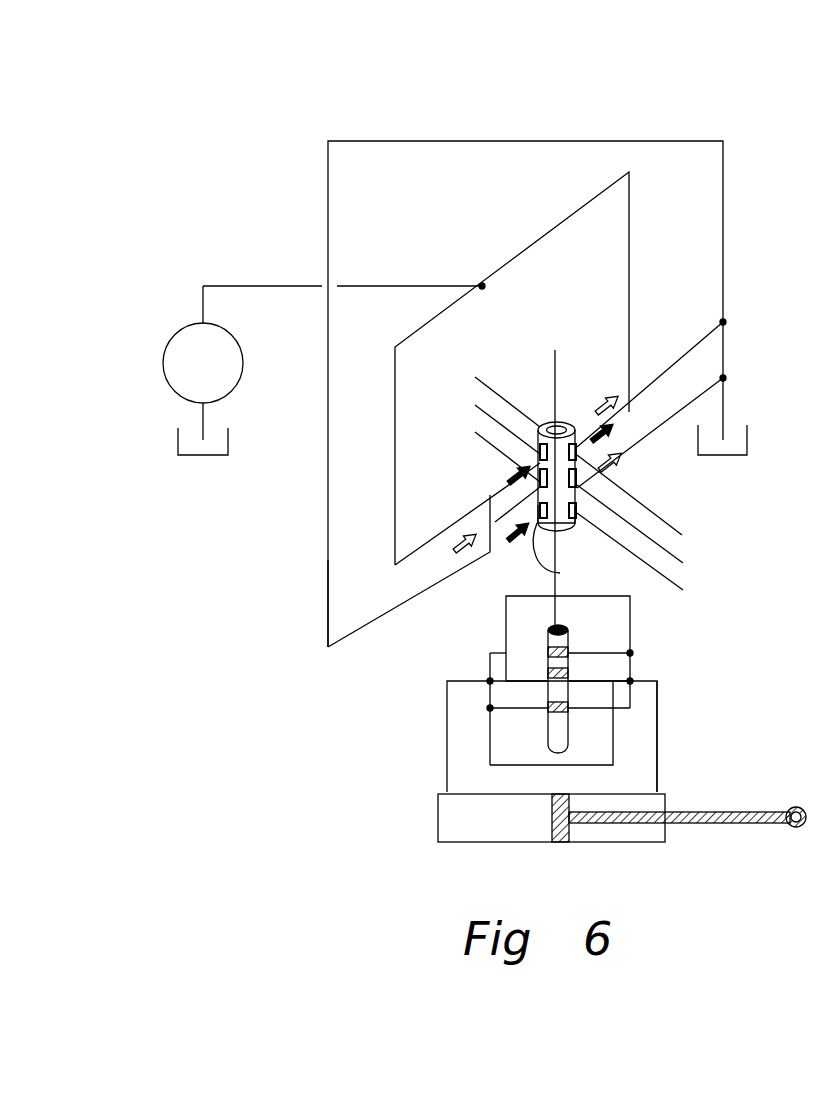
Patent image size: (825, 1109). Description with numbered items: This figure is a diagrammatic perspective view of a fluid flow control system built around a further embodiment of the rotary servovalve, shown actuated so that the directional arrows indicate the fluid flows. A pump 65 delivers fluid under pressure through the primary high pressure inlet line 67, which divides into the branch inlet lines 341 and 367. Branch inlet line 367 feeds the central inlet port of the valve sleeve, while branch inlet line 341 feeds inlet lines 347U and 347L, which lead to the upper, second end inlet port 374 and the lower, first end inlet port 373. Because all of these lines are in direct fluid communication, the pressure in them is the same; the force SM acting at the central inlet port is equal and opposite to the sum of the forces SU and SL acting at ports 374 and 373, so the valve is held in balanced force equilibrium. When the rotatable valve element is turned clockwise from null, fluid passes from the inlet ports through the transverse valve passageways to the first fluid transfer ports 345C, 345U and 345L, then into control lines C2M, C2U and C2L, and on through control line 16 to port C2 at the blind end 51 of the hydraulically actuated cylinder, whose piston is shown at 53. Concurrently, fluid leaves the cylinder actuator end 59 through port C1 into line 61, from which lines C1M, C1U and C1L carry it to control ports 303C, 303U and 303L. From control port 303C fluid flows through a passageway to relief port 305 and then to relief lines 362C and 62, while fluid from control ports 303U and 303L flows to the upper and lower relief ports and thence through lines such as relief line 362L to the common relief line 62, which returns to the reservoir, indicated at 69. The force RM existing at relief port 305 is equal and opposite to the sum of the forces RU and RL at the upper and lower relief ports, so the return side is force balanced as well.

The control line 16 is at (446, 745).
The blind end 51 is at (473, 822).
The piston 53 is at (582, 845).
The cylinder actuator end 59 is at (645, 832).
The control line 61 is at (660, 745).
The relief line 62 is at (733, 350).
The pump 65 is at (245, 373).
The primary high pressure inlet line 67 is at (448, 284).
The reservoir 69 is at (727, 432).
The control port 303U is at (481, 384).
The control port 303L is at (475, 476).
The control port 303C is at (667, 532).
The relief port 305 is at (578, 520).
The branch inlet line 341 is at (395, 430).
The first fluid transfer port 345C is at (470, 420).
The first fluid transfer port 345U is at (667, 502).
The first fluid transfer port 345L is at (664, 560).
The inlet line 347U is at (490, 495).
The inlet line 347L is at (538, 515).
The relief line 362L is at (680, 355).
The relief line 362C is at (325, 622).
The branch inlet line 367 is at (630, 238).
The first end inlet port 373 is at (558, 568).
The second end inlet port 374 is at (548, 425).
The force RU is at (610, 394).
The force SM is at (628, 423).
The force RL is at (626, 462).
The force SU is at (503, 476).
The force SL is at (524, 554).
The force RM is at (419, 566).
The line C1U is at (568, 652).
The control line C2U is at (548, 650).
The line C1M is at (545, 672).
The control line C2M is at (566, 678).
The line C1L is at (566, 707).
The control line C2L is at (545, 698).
The port C1 is at (641, 779).
The port C2 is at (469, 779).